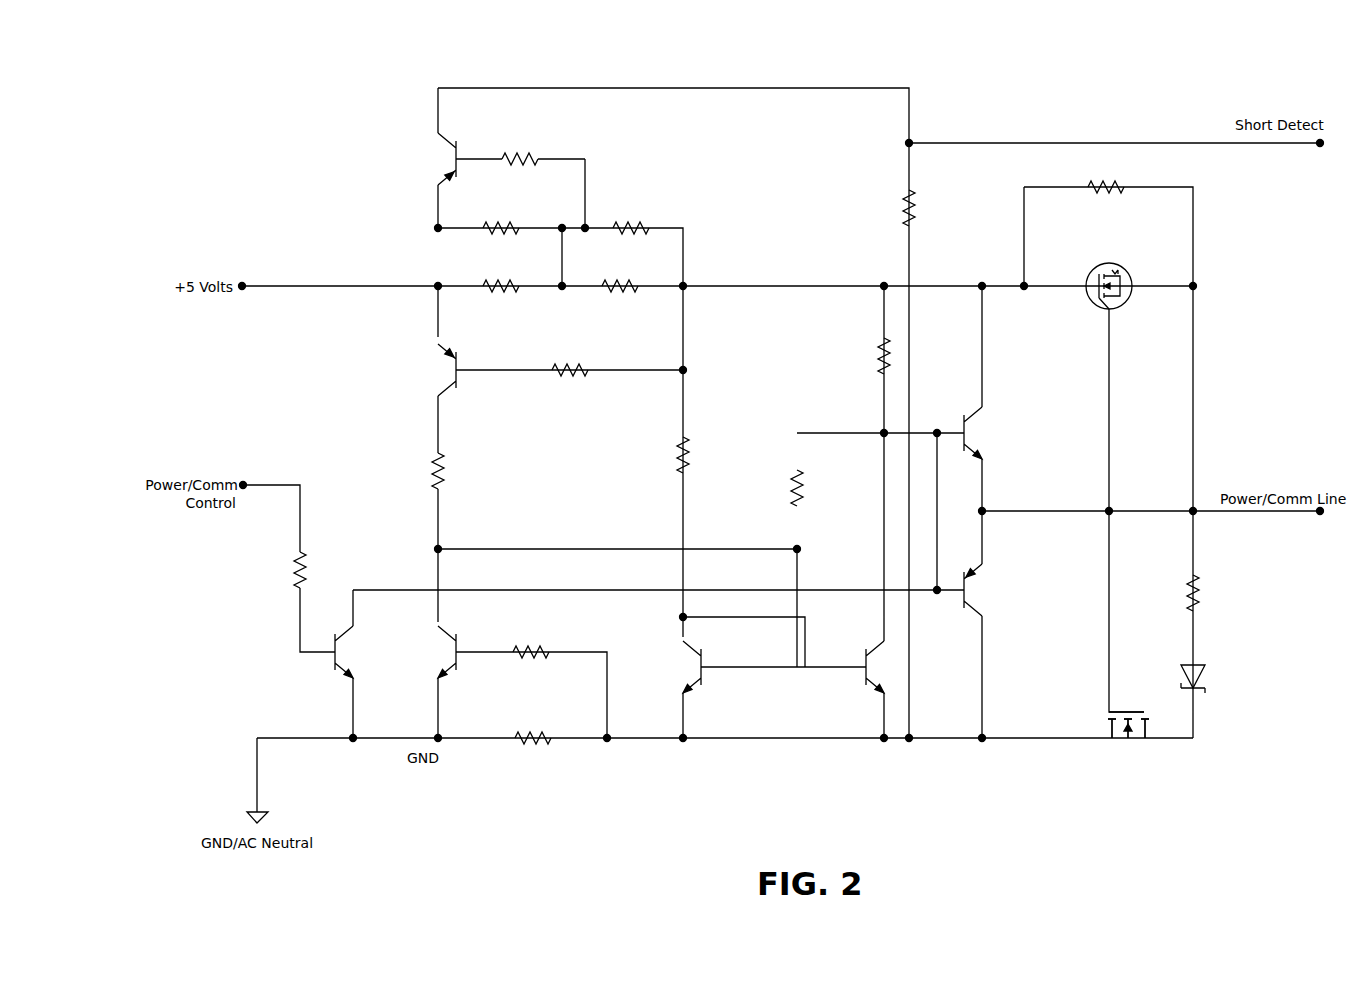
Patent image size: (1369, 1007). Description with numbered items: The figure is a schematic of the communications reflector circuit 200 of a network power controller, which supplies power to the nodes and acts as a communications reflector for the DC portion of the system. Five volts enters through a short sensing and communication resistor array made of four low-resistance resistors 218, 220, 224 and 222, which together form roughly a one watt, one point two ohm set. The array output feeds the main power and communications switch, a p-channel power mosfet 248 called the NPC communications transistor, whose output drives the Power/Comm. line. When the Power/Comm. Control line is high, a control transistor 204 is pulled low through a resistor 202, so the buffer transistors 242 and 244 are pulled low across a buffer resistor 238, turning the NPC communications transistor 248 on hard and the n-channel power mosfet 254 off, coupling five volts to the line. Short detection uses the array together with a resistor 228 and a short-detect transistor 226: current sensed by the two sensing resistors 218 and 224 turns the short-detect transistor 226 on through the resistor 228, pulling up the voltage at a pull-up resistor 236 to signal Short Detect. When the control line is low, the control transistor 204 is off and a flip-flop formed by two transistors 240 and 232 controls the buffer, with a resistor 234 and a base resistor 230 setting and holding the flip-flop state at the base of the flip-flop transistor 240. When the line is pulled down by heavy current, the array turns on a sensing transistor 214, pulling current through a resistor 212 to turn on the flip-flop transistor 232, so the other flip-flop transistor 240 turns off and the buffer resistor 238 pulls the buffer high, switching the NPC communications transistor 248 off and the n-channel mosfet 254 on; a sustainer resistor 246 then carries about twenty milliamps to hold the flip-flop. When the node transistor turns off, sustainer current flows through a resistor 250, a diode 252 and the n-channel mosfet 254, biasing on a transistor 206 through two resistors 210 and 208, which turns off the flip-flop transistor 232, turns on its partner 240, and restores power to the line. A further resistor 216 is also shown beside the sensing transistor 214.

The communications reflector circuit 200 is at (350, 44).
The resistor R14 202 is at (298, 585).
The transistor Q9 204 is at (345, 690).
The transistor Q7 206 is at (443, 625).
The resistor R10 208 is at (550, 652).
The resistor R8 210 is at (528, 745).
The resistor R6 212 is at (436, 486).
The transistor Q8 214 is at (452, 380).
The resistor R9 216 is at (586, 368).
The resistor R7 218 is at (480, 286).
The resistor R11 220 is at (640, 286).
The resistor R13 222 is at (652, 228).
The resistor R12 224 is at (524, 228).
The transistor Q10 226 is at (452, 147).
The resistor R15 228 is at (532, 157).
The resistor R4 230 is at (680, 468).
The transistor Q6 232 is at (695, 675).
The resistor R5 234 is at (795, 476).
The resistor R16 236 is at (907, 222).
The resistor R3 238 is at (882, 343).
The transistor Q5 240 is at (868, 680).
The transistor Q1 242 is at (968, 438).
The transistor Q2 244 is at (968, 595).
The sustainer resistor R2 246 is at (1118, 185).
The p-channel mosfet Q4 248 is at (1087, 297).
The resistor R1 250 is at (1191, 583).
The diode D1 252 is at (1185, 668).
The power mosfet Q3 254 is at (1125, 730).